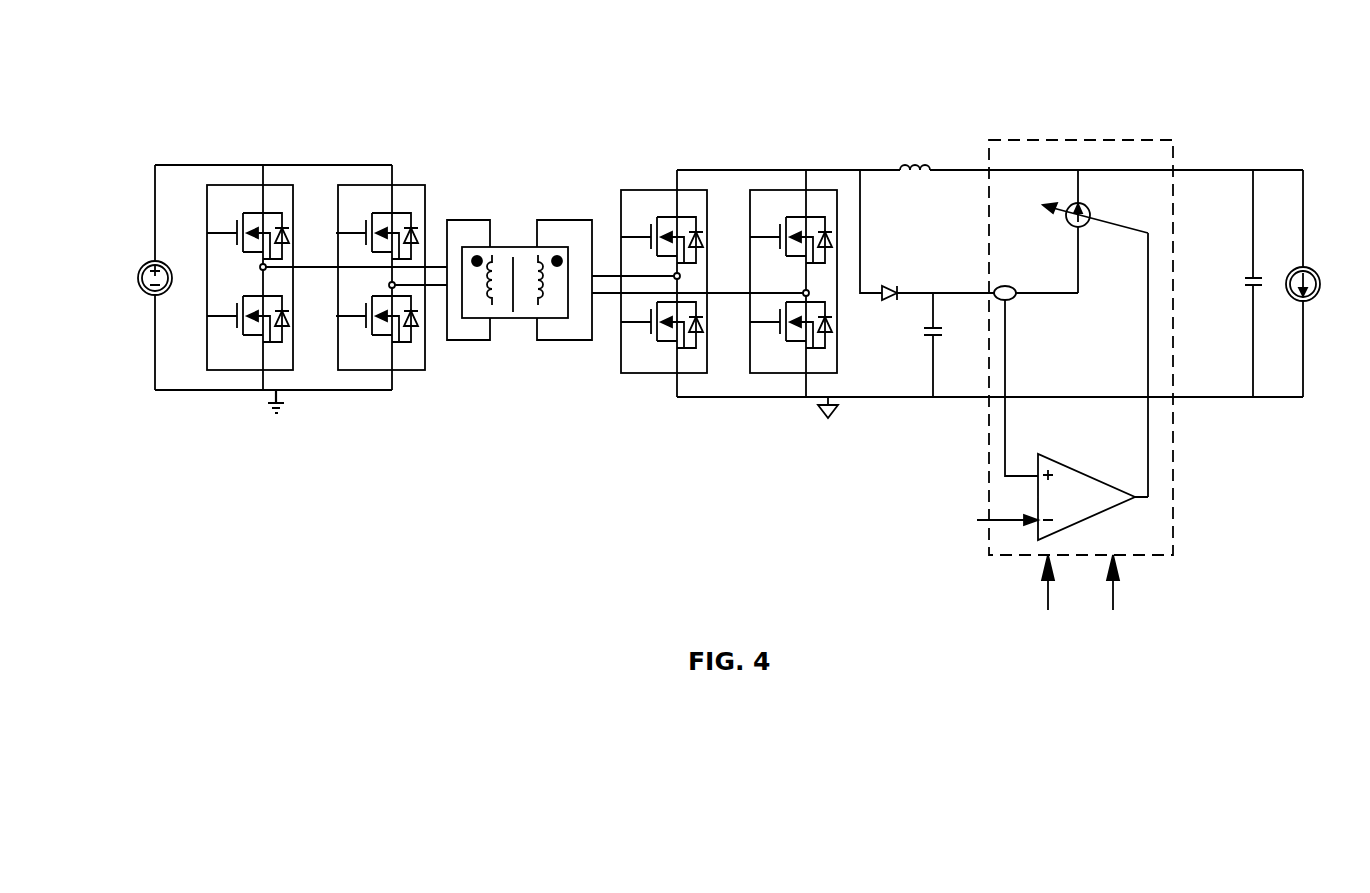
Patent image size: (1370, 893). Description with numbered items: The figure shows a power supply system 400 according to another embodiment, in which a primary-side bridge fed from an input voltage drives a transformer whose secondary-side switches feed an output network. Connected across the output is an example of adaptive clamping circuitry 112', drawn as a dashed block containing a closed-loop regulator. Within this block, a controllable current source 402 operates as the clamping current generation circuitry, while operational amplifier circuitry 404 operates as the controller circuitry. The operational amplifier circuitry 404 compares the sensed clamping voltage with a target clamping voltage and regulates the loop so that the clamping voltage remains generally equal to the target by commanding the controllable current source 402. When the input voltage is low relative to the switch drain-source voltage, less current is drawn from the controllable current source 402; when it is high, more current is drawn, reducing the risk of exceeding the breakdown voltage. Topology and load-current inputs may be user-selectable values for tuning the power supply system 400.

The power supply system 400 is at (148, 68).
The adaptive clamping circuitry 112' is at (1024, 359).
The controllable current source 402 is at (1055, 258).
The operational amplifier circuitry 404 is at (1107, 453).